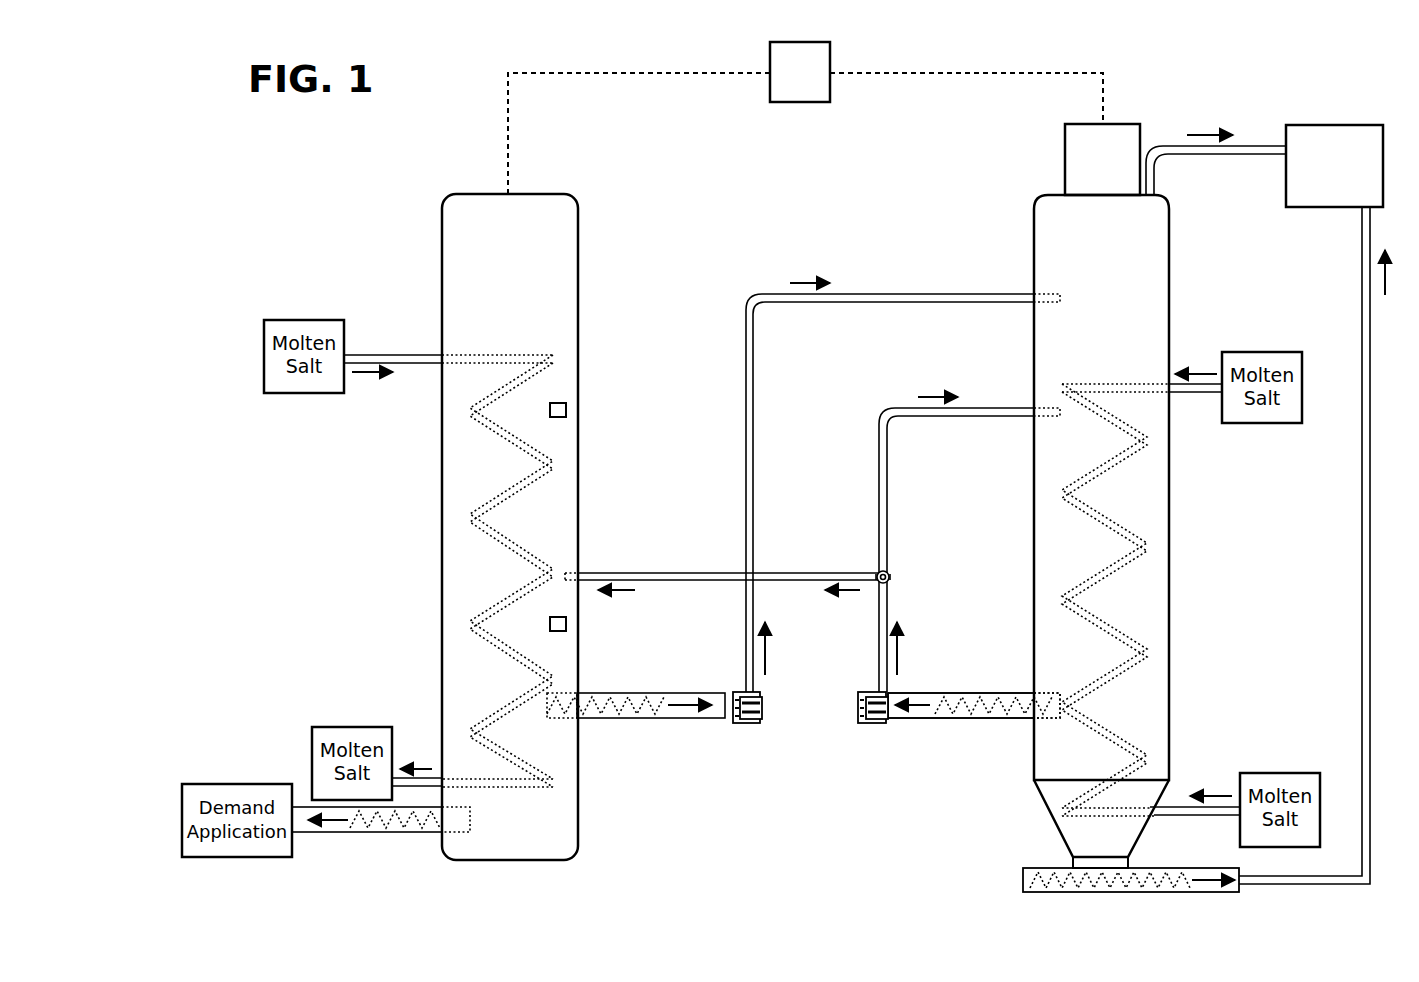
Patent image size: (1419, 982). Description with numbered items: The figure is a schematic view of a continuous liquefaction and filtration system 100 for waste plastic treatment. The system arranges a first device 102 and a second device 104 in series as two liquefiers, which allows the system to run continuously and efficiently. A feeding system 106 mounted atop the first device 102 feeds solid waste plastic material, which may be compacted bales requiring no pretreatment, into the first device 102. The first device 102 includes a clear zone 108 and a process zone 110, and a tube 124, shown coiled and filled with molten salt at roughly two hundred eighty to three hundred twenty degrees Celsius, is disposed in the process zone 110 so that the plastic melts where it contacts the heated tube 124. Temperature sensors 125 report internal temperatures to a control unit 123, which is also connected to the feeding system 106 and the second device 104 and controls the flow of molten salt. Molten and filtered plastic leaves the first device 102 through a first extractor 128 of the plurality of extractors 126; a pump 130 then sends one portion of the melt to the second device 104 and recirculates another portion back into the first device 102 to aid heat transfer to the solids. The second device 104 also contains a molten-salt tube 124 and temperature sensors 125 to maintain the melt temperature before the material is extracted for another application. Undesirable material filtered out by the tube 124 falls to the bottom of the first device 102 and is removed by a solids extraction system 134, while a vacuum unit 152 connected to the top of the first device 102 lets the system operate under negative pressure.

The continuous liquefaction and filtration system 100 is at (1212, 88).
The first device 102 is at (984, 214).
The second device 104 is at (612, 220).
The feeding system 106 is at (1065, 164).
The clear zone 108 is at (1081, 332).
The process zone 110 is at (1200, 606).
The control unit 123 is at (783, 83).
The tube 124 is at (533, 378).
The temperature sensors 125 is at (566, 410).
The extractors 126 is at (637, 718).
The first extractor 128 is at (970, 725).
The pump 130 is at (748, 725).
The solids extraction system 134 is at (1044, 898).
The vacuum unit 152 is at (1318, 176).